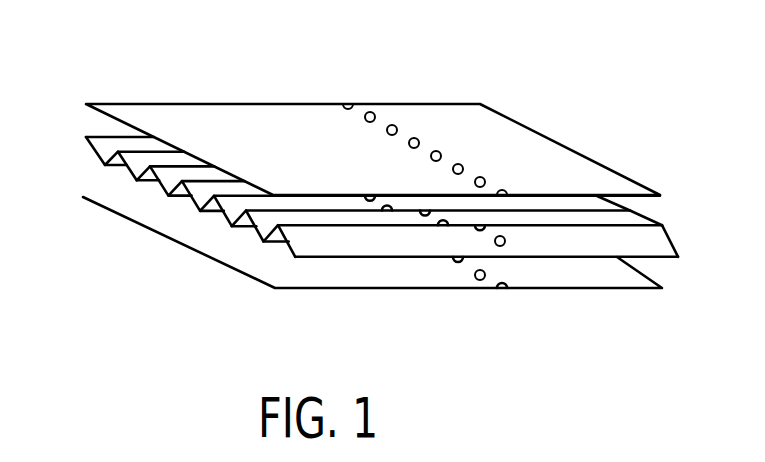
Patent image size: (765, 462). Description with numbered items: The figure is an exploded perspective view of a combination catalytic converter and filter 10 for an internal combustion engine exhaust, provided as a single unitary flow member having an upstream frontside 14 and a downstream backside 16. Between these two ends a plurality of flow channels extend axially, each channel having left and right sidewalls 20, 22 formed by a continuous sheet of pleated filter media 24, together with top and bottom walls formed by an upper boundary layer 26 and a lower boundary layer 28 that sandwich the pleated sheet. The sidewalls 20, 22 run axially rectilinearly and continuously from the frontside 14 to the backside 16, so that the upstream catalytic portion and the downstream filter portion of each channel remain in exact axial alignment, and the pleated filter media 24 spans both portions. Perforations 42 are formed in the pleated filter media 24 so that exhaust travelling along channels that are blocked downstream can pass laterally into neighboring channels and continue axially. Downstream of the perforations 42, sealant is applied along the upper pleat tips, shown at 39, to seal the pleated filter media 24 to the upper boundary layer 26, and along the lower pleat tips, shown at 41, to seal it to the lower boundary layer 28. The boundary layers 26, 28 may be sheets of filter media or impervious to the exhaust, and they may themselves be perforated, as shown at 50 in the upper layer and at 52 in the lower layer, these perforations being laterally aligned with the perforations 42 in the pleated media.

The combination catalytic converter and filter 10 is at (511, 59).
The upstream frontside 14 is at (680, 224).
The downstream backside 16 is at (86, 161).
The left sidewall 20 is at (327, 243).
The right sidewall 22 is at (279, 242).
The pleated filter media 24 is at (677, 248).
The upper boundary layer 26 is at (557, 155).
The lower boundary layer 28 is at (602, 277).
The sealant along upper pleat tips 39 is at (315, 225).
The sealant along lower pleat tips 41 is at (249, 229).
The perforations 42 is at (506, 241).
The perforations in upper boundary layer 50 is at (440, 151).
The perforations in lower boundary layer 52 is at (479, 281).